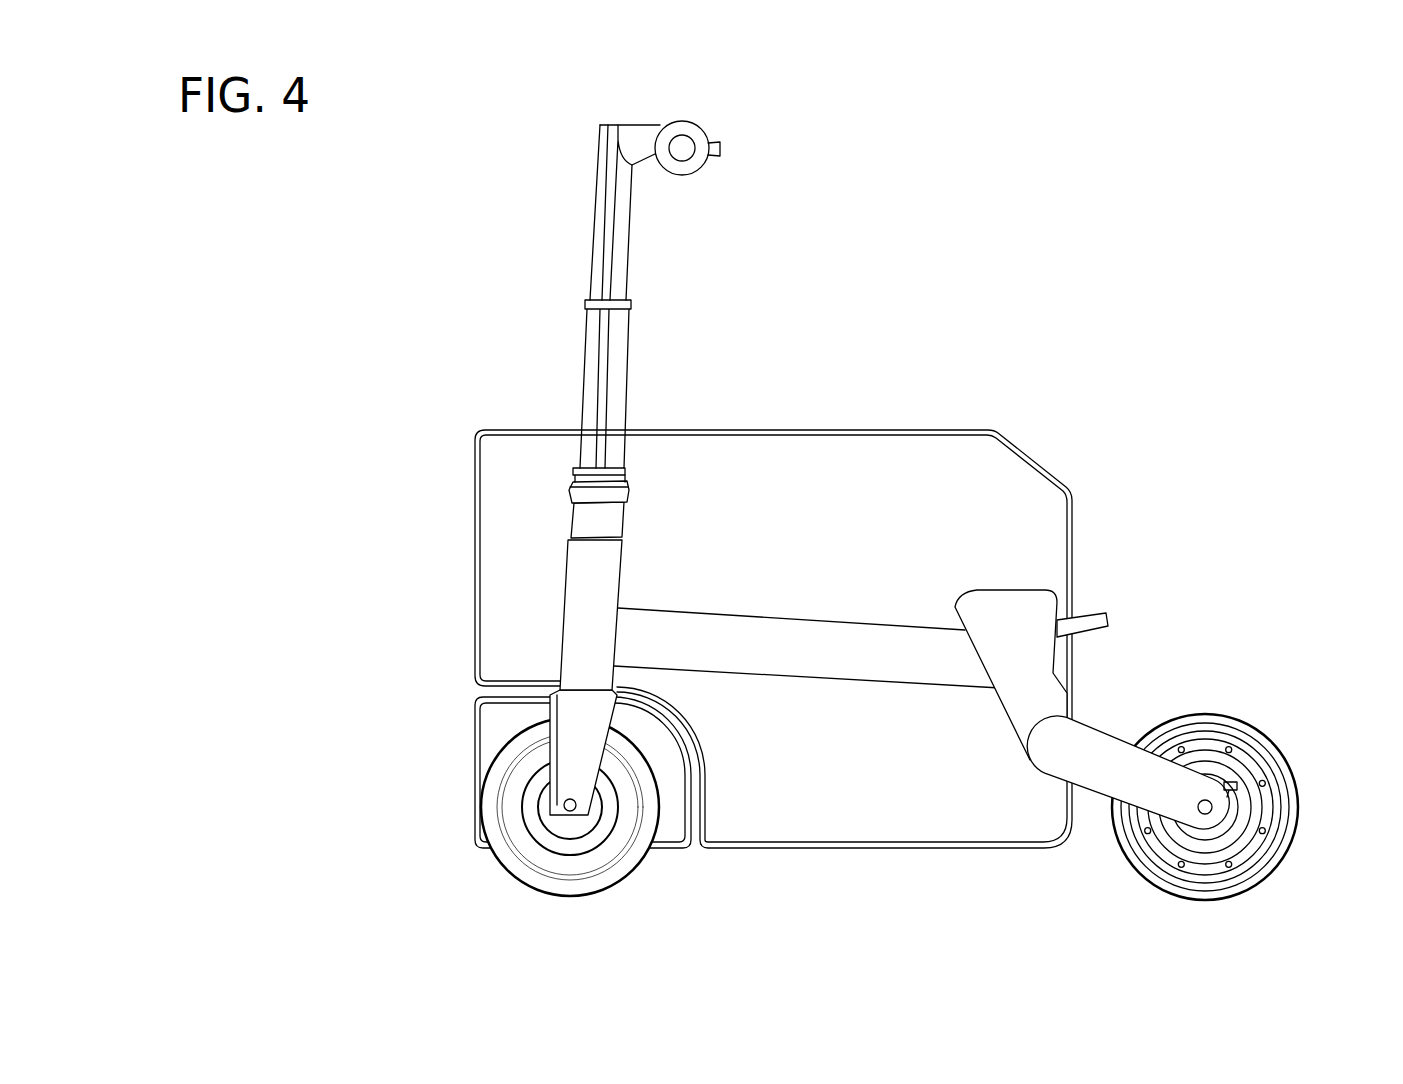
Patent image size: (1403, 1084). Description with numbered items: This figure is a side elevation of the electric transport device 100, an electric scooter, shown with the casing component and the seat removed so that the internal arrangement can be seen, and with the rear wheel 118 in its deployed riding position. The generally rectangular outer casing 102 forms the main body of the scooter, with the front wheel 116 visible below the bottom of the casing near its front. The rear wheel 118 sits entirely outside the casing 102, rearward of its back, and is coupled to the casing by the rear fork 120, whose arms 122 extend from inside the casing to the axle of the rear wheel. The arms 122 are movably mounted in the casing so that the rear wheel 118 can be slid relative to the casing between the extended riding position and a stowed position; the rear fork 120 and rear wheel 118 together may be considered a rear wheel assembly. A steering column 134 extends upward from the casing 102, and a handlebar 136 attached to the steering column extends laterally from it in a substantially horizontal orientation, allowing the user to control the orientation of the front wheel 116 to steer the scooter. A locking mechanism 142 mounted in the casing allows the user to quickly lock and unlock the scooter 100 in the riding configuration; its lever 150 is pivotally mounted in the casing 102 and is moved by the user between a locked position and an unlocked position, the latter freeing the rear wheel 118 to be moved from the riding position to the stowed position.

The electric transport device 100 is at (1278, 200).
The outer casing 102 is at (858, 428).
The front wheel 116 is at (522, 876).
The rear wheel 118 is at (1252, 878).
The rear fork 120 is at (1120, 737).
The arms 122 is at (1097, 778).
The steering column 134 is at (602, 222).
The handlebar 136 is at (692, 132).
The locking mechanism 142 is at (1073, 620).
The lever 150 is at (1110, 625).